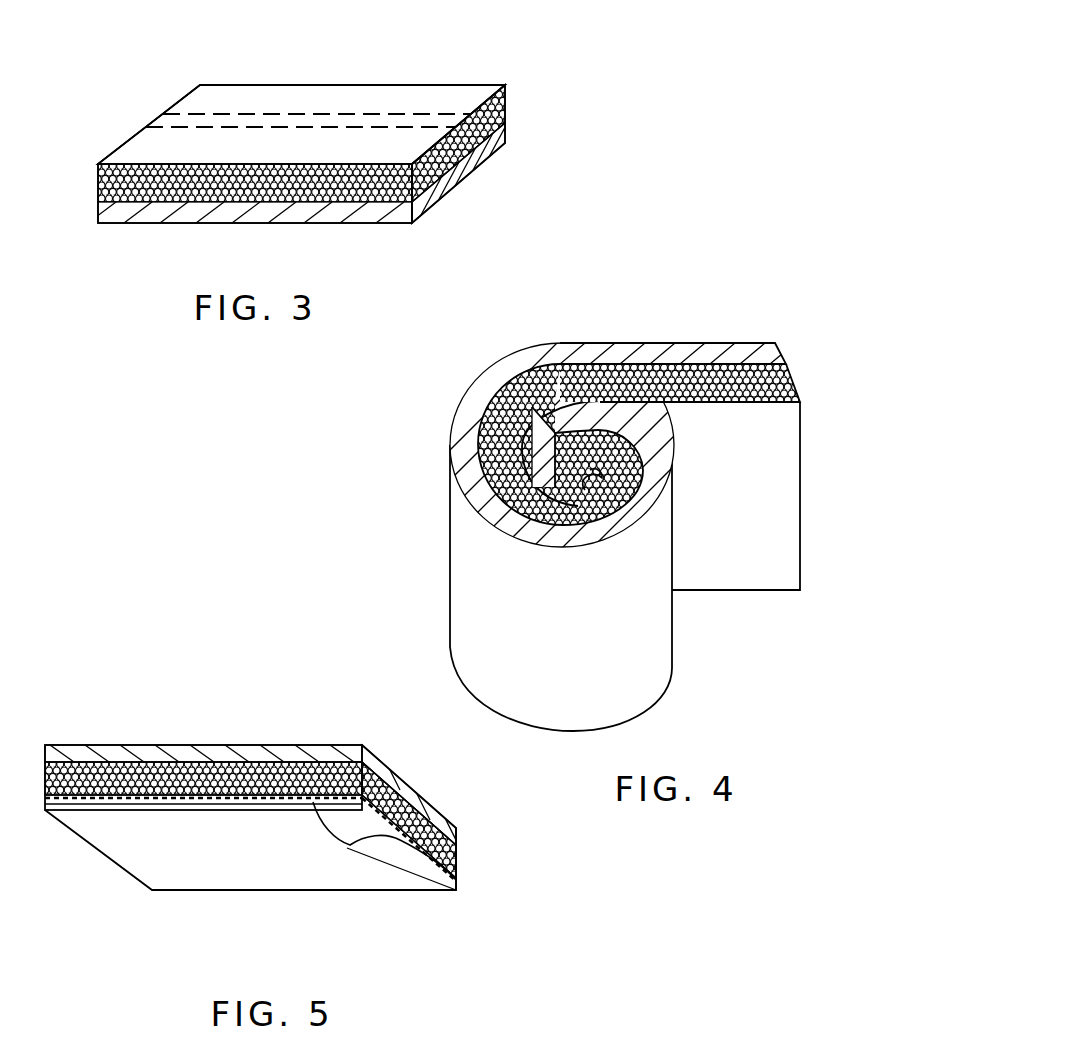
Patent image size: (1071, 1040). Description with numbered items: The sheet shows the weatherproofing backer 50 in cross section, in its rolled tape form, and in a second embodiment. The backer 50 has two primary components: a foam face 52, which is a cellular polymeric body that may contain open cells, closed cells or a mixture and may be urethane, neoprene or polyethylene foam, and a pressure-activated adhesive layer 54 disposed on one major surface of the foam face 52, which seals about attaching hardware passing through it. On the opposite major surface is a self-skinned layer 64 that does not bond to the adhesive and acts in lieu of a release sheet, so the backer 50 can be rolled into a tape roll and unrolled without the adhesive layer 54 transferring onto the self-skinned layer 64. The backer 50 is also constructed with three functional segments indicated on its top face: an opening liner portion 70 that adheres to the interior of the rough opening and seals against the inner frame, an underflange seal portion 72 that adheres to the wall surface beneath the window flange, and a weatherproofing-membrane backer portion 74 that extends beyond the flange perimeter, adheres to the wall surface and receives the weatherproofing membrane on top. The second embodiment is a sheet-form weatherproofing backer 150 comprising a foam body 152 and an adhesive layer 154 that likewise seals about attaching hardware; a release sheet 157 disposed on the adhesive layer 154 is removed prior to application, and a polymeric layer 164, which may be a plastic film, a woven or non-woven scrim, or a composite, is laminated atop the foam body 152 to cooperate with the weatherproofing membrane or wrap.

In FIG. 3, the weatherproofing backer 50 is at (339, 120).
In FIG. 4, the weatherproofing backer 50 is at (588, 498).
In FIG. 3, the foam face 52 is at (507, 110).
In FIG. 4, the foam face 52 is at (797, 381).
In FIG. 3, the pressure-activated adhesive layer 54 is at (507, 140).
In FIG. 3, the self-skinned layer 64 is at (290, 148).
In FIG. 4, the self-skinned layer 64 is at (736, 496).
In FIG. 3, the opening liner portion 70 is at (198, 103).
In FIG. 3, the underflange seal portion 72 is at (161, 126).
In FIG. 3, the weatherproofing-membrane backer portion 74 is at (133, 152).
In FIG. 5, the weatherproofing backer 150 is at (313, 832).
In FIG. 5, the foam body 152 is at (457, 850).
In FIG. 5, the adhesive layer 154 is at (458, 877).
In FIG. 5, the release sheet 157 is at (392, 876).
In FIG. 5, the polymeric layer 164 is at (320, 745).